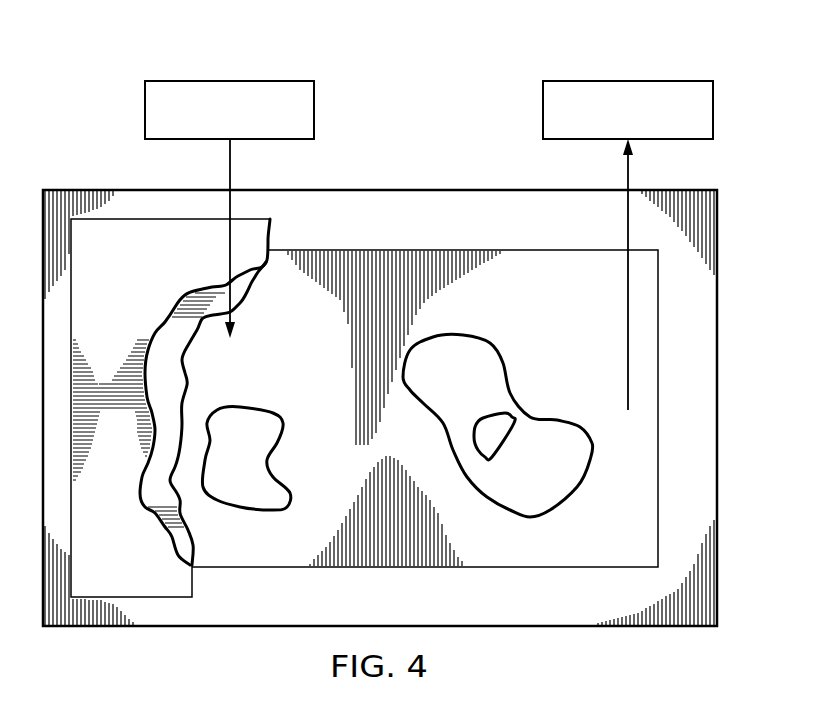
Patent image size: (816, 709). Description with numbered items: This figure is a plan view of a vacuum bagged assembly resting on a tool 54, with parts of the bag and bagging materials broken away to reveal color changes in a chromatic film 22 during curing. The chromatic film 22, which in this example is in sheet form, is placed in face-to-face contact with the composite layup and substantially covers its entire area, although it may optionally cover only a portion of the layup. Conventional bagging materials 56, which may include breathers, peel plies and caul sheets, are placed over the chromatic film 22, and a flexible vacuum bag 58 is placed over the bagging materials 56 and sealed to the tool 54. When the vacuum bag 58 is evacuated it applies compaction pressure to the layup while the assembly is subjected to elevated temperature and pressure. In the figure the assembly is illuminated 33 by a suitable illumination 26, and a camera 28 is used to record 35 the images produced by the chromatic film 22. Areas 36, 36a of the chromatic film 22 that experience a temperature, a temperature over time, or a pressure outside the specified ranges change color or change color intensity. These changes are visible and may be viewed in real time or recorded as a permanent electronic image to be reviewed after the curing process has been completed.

The chromatic film 22 is at (540, 257).
The illumination 26 is at (222, 80).
The camera 28 is at (638, 80).
The illuminating 33 is at (229, 170).
The recording 35 is at (630, 168).
The area of the chromatic film 36 is at (240, 511).
The area of the chromatic film 36a is at (505, 442).
The tool 54 is at (380, 197).
The bagging materials 56 is at (182, 385).
The vacuum bag 58 is at (137, 227).